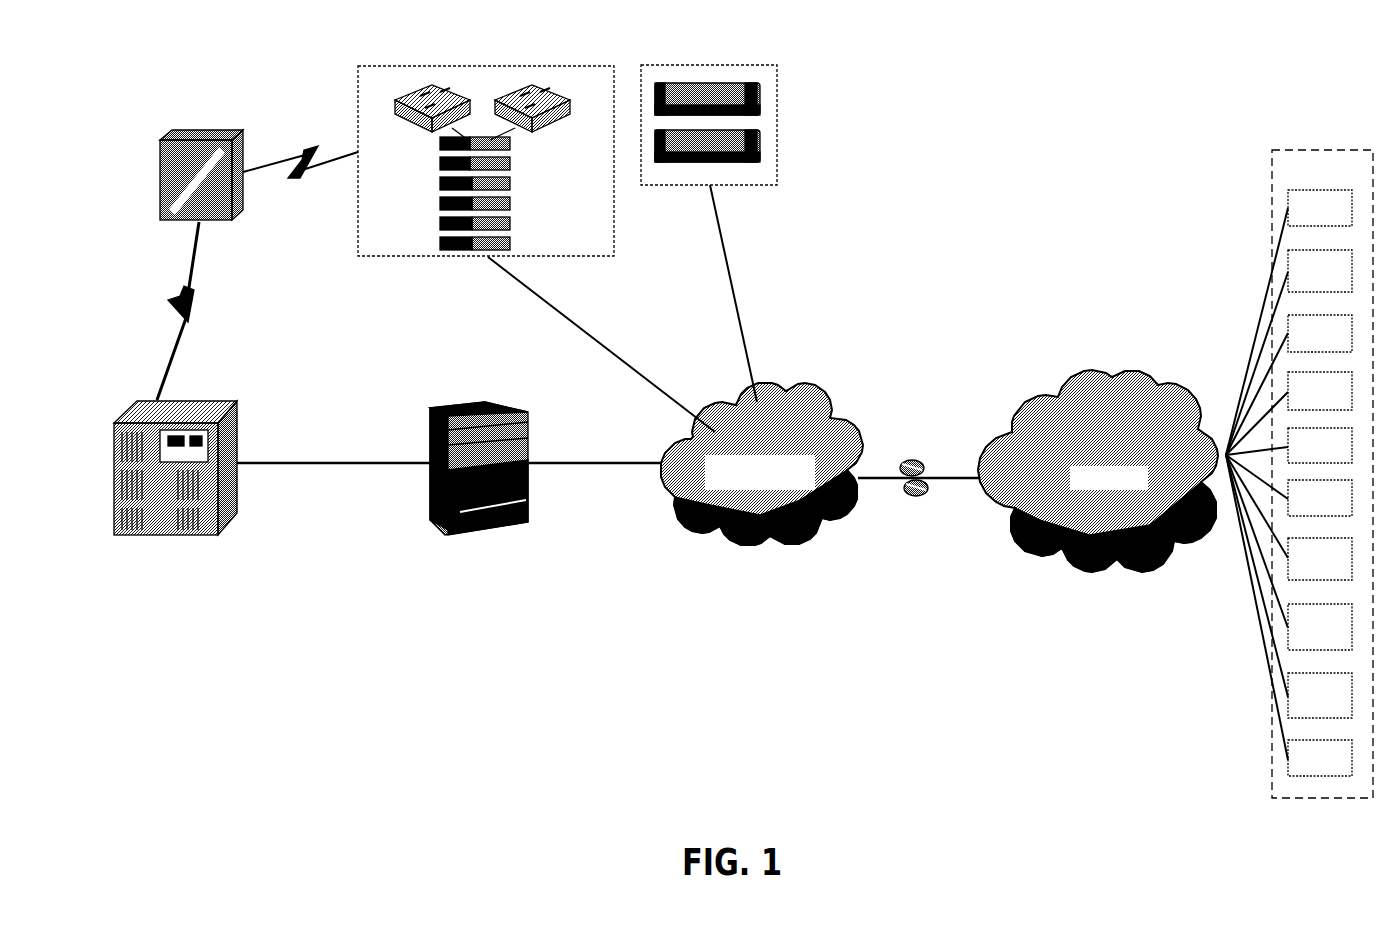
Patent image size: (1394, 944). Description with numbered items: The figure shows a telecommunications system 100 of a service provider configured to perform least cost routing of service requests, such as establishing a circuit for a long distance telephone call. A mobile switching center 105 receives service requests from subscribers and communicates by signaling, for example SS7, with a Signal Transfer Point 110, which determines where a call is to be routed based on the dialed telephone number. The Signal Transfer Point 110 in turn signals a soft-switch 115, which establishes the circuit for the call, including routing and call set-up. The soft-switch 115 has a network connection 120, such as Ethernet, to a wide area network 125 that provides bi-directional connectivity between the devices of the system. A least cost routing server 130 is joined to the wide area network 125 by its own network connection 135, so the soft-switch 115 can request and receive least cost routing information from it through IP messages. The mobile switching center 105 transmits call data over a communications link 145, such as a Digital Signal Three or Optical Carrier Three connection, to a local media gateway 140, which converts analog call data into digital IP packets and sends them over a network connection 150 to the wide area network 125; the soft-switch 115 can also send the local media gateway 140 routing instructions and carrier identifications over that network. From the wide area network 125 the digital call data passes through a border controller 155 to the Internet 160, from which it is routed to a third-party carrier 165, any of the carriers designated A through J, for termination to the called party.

The telecommunications system 100 is at (1039, 112).
The mobile switching center 105 is at (180, 535).
The Signal Transfer Point (STP) 110 is at (197, 128).
The soft-switch 115 is at (498, 65).
The network connection 120 is at (550, 308).
The wide area network (WAN) 125 is at (735, 550).
The least cost routing server 130 is at (777, 128).
The network connection 135 is at (737, 288).
The local media gateway 140 is at (443, 527).
The communications link 145 is at (352, 468).
The network connection 150 is at (617, 465).
The border controller 155 is at (917, 462).
The Internet 160 is at (1077, 578).
The third-party carrier 165 is at (1328, 150).